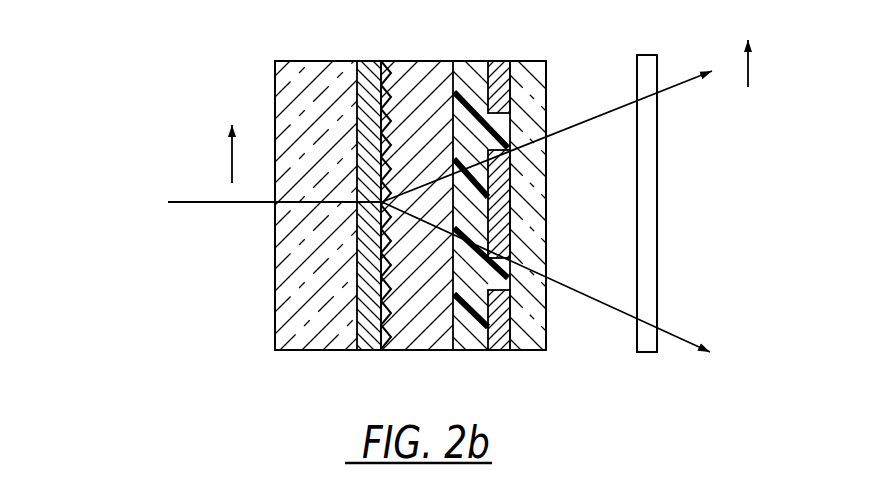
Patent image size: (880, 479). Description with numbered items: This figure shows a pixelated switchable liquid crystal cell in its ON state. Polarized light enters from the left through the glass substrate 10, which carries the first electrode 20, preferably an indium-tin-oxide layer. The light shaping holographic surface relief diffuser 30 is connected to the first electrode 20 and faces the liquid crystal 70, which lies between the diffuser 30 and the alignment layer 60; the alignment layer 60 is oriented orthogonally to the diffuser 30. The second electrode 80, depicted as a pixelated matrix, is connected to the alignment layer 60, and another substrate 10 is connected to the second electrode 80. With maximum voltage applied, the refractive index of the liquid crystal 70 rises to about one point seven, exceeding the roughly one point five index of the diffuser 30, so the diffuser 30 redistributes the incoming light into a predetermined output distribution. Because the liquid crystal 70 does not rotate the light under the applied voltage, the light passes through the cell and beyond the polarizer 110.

The substrate 10 is at (279, 64).
The first electrode 20 is at (370, 61).
The light shaping holographic surface relief diffuser 30 is at (388, 61).
The alignment layer 60 is at (481, 61).
The liquid crystal 70 is at (437, 352).
The second electrode 80 is at (500, 61).
The polarizer 110 is at (658, 268).